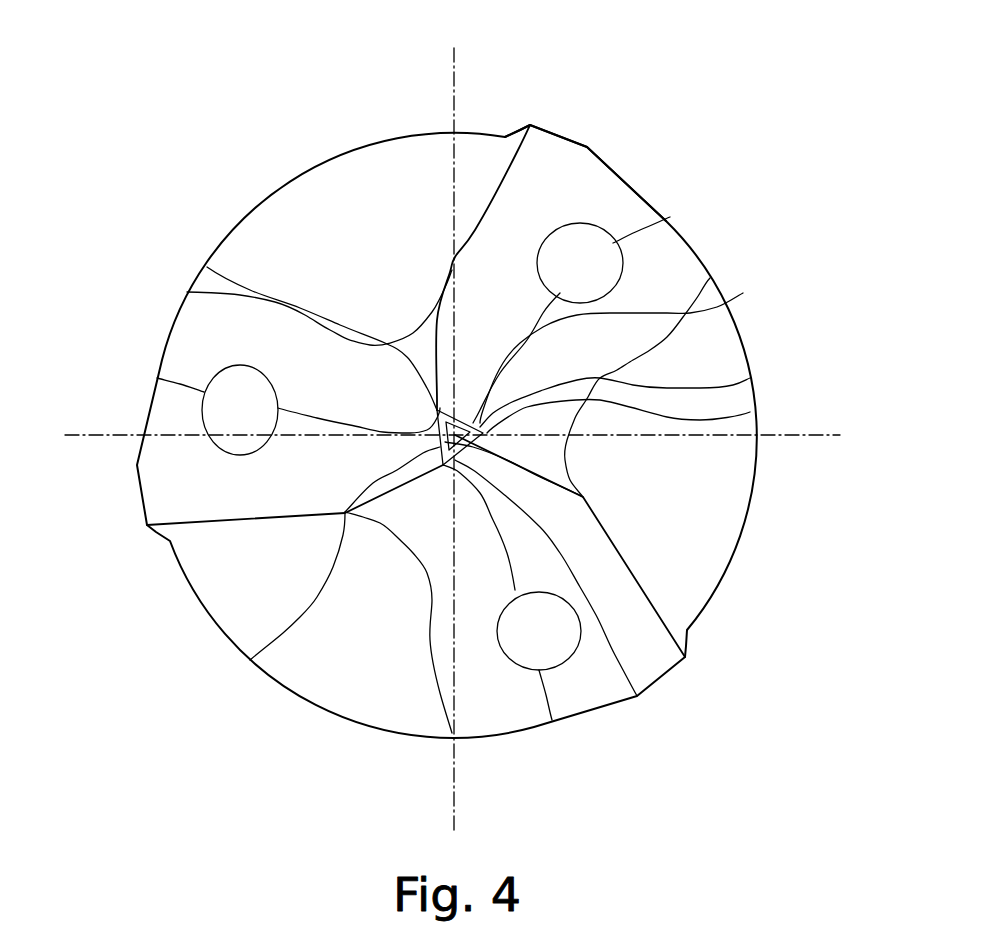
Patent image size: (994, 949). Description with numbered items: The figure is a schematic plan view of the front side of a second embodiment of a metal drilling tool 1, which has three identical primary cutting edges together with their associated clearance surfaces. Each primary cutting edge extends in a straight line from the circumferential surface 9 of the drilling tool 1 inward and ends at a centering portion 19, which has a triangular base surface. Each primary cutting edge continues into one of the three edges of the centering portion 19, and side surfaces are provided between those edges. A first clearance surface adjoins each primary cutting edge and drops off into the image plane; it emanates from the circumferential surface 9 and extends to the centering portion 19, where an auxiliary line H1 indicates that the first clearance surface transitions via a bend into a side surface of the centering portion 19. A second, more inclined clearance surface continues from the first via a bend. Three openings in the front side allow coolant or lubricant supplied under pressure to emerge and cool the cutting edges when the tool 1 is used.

The metal drilling tool 1 is at (838, 220).
The circumferential surface 9 is at (545, 121).
The centering portion 19 is at (743, 293).
The auxiliary line H1 is at (750, 378).